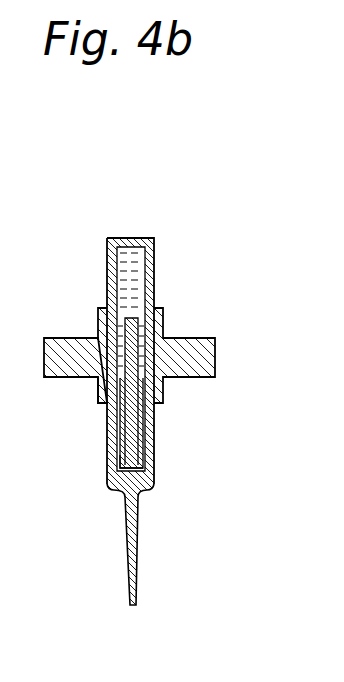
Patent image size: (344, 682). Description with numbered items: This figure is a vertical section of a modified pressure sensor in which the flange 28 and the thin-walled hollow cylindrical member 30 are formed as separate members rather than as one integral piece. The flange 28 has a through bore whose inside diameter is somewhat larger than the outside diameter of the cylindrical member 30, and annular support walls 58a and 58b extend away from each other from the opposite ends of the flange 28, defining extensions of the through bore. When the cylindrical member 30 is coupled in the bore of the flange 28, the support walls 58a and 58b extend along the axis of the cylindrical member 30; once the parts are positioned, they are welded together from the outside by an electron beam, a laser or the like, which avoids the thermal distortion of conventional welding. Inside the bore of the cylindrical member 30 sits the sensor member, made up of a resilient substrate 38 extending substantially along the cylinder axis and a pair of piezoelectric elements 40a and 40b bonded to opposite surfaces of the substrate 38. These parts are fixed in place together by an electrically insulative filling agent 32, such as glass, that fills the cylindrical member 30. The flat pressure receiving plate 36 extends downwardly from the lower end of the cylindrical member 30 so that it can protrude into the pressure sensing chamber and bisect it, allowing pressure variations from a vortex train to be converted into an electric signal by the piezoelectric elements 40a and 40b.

The hollow cylindrical member 30 is at (157, 265).
The filling agent 32 is at (133, 305).
The flange 28 is at (200, 348).
The annular support wall 58a is at (97, 322).
The annular support wall 58b is at (97, 395).
The resilient substrate 38 is at (127, 390).
The piezoelectric element 40a is at (122, 457).
The piezoelectric element 40b is at (143, 417).
The pressure receiving plate 36 is at (138, 546).